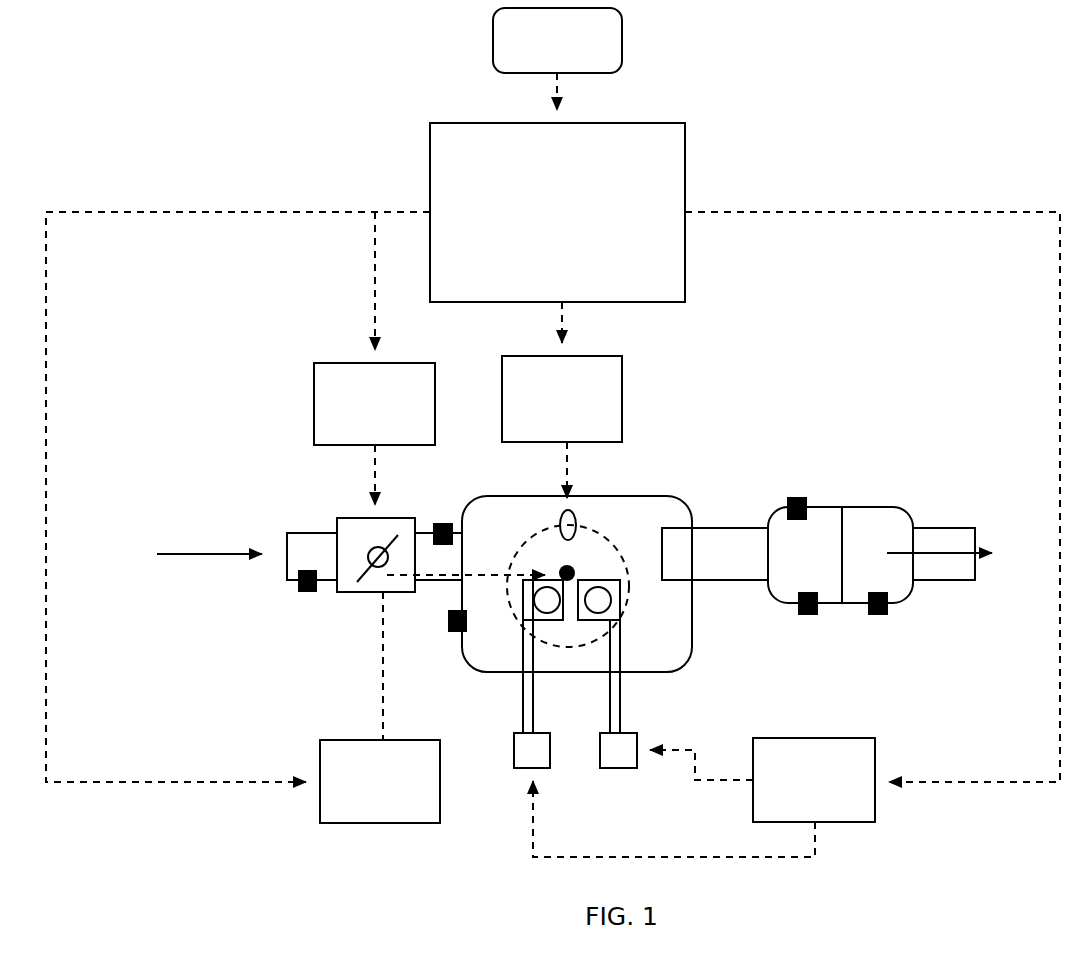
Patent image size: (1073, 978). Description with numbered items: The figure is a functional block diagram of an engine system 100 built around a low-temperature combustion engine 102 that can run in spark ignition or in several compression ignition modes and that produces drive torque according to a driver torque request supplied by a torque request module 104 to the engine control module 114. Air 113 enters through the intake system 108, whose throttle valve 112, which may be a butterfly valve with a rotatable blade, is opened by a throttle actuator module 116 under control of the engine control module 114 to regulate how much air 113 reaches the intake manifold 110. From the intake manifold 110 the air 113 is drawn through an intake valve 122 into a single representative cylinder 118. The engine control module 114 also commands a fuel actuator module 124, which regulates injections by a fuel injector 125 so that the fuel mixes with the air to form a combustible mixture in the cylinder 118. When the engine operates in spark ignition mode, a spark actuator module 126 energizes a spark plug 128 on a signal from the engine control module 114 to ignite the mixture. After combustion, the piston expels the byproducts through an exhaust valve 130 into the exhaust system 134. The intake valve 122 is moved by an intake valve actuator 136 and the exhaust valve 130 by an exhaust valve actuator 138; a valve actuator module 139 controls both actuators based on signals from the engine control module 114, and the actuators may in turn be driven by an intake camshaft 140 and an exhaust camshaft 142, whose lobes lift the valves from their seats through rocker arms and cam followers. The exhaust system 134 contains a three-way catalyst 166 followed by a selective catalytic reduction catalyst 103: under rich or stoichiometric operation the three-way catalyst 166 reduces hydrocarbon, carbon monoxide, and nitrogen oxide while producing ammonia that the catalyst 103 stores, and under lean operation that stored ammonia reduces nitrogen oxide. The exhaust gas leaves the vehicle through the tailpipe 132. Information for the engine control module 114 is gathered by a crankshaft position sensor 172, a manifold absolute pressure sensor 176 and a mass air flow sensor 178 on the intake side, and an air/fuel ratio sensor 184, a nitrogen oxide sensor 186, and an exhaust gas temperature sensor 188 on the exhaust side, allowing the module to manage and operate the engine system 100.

The engine system 100 is at (808, 190).
The low-temperature combustion (LTC) engine 102 is at (660, 515).
The selective catalytic reduction (SCR) catalyst 103 is at (900, 527).
The torque request module 104 is at (575, 53).
The intake system 108 is at (332, 618).
The intake manifold 110 is at (297, 550).
The throttle valve 112 is at (372, 528).
The air 113 is at (198, 555).
The engine control module (ECM) 114 is at (575, 225).
The throttle actuator module 116 is at (393, 417).
The cylinder 118 is at (632, 572).
The intake valve 122 is at (540, 603).
The fuel actuator module 124 is at (580, 413).
The fuel injector 125 is at (576, 510).
The spark actuator module 126 is at (399, 795).
The spark plug 128 is at (558, 560).
The exhaust valve 130 is at (602, 603).
The tailpipe 132 is at (947, 557).
The exhaust system 134 is at (842, 488).
The intake valve actuator 136 is at (548, 575).
The exhaust valve actuator 138 is at (582, 580).
The valve actuator module 139 is at (833, 793).
The intake camshaft 140 is at (520, 698).
The exhaust camshaft 142 is at (616, 692).
The three-way catalyst 166 is at (822, 513).
The crankshaft position (CKP) sensor 172 is at (452, 637).
The manifold absolute pressure (MAP) sensor 176 is at (440, 517).
The mass air flow (MAF) sensor 178 is at (302, 592).
The A/F ratio (AFR) sensor 184 is at (796, 497).
The nitrogen oxide (NOx) sensor 186 is at (807, 617).
The exhaust gas temperature (EGT) sensor 188 is at (878, 617).